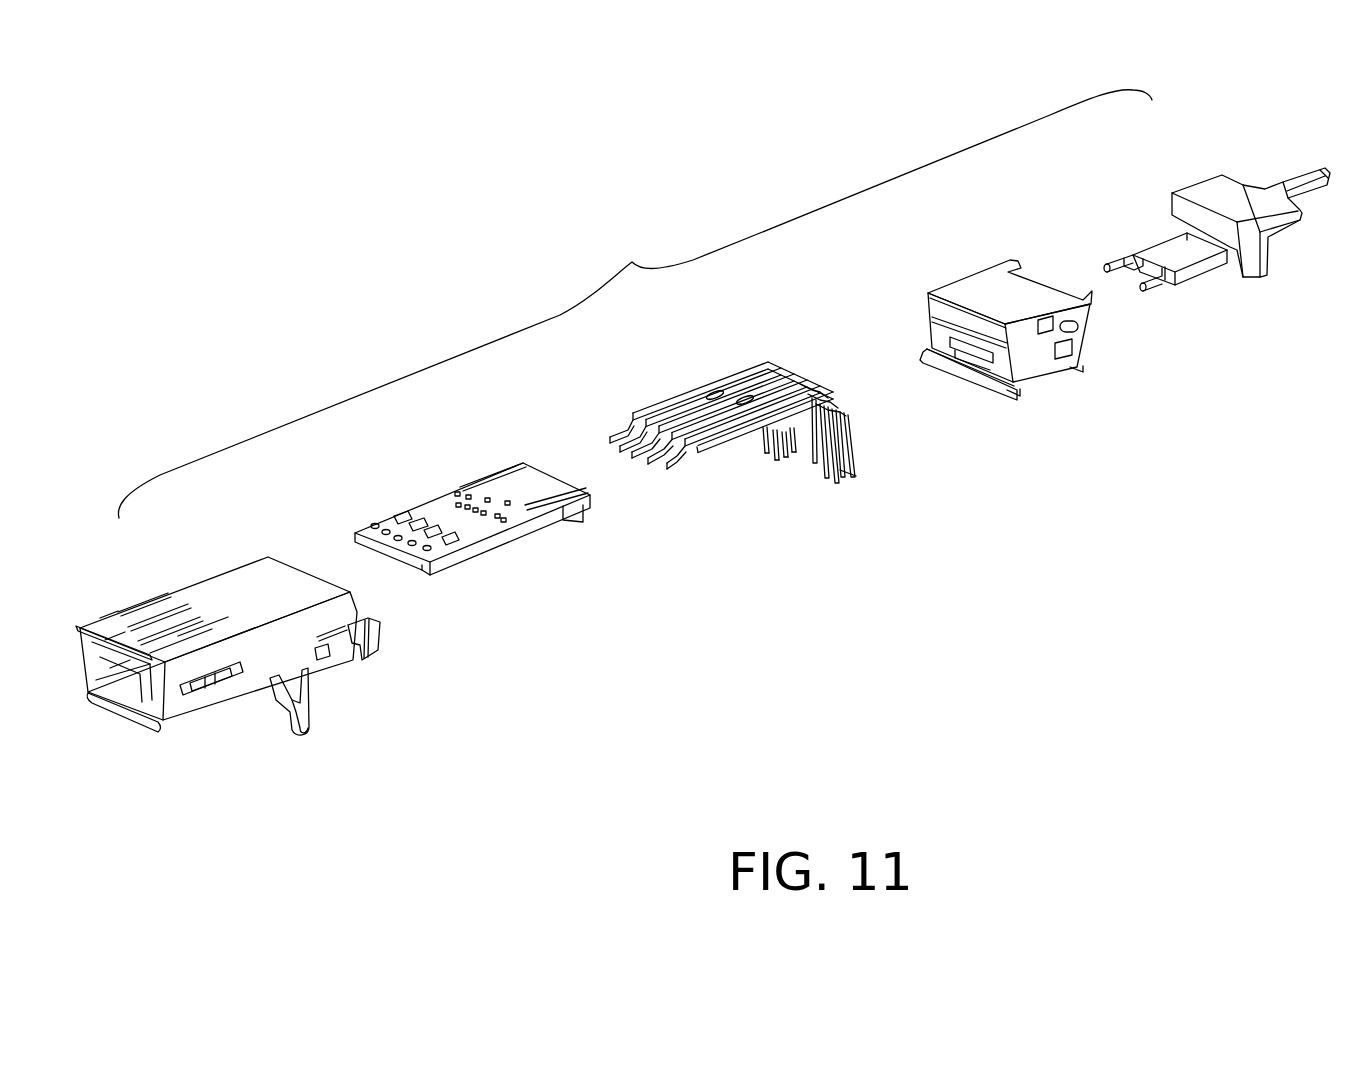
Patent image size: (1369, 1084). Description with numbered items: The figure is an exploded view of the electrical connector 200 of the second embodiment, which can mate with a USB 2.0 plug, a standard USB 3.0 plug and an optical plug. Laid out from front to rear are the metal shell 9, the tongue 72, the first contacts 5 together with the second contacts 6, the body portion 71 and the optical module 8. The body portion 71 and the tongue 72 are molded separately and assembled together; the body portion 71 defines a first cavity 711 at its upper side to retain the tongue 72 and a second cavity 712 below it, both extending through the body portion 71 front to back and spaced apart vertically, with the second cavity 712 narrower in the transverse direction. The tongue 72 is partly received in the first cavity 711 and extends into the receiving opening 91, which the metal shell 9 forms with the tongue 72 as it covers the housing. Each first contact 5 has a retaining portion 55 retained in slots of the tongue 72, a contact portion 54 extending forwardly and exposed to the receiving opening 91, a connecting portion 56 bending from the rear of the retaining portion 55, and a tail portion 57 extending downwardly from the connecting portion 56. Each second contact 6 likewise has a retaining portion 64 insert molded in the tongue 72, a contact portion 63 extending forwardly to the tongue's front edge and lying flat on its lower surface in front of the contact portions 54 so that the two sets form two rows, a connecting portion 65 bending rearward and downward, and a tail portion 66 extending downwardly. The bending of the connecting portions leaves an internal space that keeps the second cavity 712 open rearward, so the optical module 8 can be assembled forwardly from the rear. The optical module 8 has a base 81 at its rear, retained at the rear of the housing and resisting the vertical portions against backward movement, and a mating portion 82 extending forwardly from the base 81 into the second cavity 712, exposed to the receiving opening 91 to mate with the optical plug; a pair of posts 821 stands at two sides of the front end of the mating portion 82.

The electrical connector 200 is at (635, 304).
The metal shell 9 is at (228, 653).
The receiving opening 91 is at (130, 703).
The tongue 72 is at (410, 490).
The second contacts 6 is at (728, 424).
The contact portion 63 is at (620, 432).
The retaining portion 64 is at (677, 395).
The connecting portion 65 is at (840, 408).
The first contacts 5 is at (794, 479).
The contact portion 54 is at (710, 456).
The retaining portion 55 is at (760, 455).
The connecting portion 56 is at (828, 425).
The tail portion 57 is at (832, 480).
The tail portion 66 is at (850, 480).
The body portion 71 is at (963, 335).
The first cavity 711 is at (930, 310).
The second cavity 712 is at (978, 345).
The optical module 8 is at (1177, 245).
The base 81 is at (1268, 255).
The mating portion 82 is at (1126, 275).
The posts 821 is at (1093, 241).